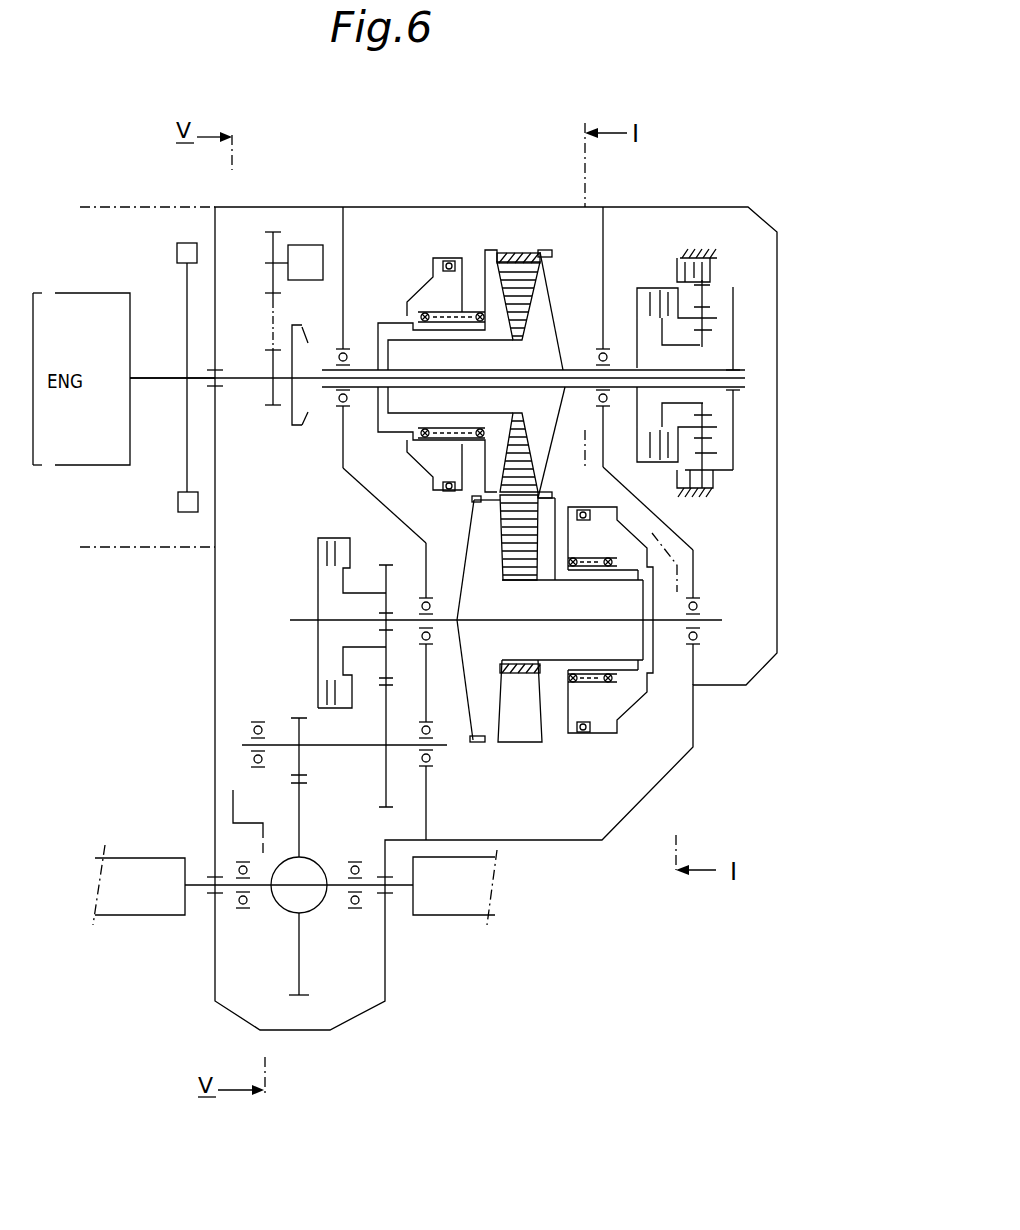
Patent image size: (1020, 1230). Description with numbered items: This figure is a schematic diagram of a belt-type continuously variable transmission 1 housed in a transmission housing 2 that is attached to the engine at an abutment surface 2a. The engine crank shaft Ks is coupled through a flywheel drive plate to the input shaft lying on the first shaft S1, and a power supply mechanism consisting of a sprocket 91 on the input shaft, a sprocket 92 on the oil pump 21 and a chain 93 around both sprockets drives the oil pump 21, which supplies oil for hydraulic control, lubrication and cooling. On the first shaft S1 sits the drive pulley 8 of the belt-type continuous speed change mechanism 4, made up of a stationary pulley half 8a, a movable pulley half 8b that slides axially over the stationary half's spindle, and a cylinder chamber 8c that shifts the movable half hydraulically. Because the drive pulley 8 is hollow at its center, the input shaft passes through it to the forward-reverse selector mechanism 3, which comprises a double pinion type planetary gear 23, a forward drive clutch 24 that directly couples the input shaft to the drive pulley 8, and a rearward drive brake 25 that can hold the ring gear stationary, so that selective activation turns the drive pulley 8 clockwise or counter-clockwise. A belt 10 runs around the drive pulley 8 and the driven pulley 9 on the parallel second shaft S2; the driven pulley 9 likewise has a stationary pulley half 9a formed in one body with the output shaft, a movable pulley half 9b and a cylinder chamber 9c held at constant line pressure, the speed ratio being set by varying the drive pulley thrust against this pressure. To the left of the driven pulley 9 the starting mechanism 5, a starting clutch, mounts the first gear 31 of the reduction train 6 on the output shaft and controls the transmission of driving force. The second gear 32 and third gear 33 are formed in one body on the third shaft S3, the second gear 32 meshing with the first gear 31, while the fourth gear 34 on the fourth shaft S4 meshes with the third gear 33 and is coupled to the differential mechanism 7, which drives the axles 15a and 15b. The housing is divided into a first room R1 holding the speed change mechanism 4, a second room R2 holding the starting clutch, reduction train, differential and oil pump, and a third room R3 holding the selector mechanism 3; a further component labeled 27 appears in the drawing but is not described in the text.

The belt-type continuously variable transmission 1 is at (483, 157).
The transmission housing 2 is at (762, 218).
The abutment surface 2a is at (213, 233).
The forward-reverse selector mechanism 3 is at (750, 180).
The belt-type continuous speed change mechanism 4 is at (443, 252).
The starting mechanism 5 is at (327, 538).
The reduction train 6 is at (206, 748).
The differential mechanism 7 is at (315, 920).
The drive pulley 8 is at (583, 177).
The stationary pulley half 8a is at (549, 250).
The movable pulley half 8b is at (500, 252).
The cylinder chamber 8c is at (470, 270).
The driven pulley 9 is at (633, 773).
The stationary pulley half 9a is at (487, 715).
The movable pulley half 9b is at (557, 703).
The cylinder chamber 9c is at (590, 693).
The belt 10 is at (507, 548).
The oil pump 21 is at (302, 245).
The double pinion type planetary gear 23 is at (707, 310).
The forward drive clutch 24 is at (649, 288).
The rearward drive brake 25 is at (677, 267).
The one-way clutch 27 is at (300, 302).
The first gear 31 is at (377, 562).
The second gear 32 is at (382, 713).
The third gear 33 is at (297, 717).
The fourth gear 34 is at (297, 813).
The sprocket 91 is at (272, 388).
The sprocket 92 is at (269, 247).
The chain 93 is at (272, 325).
The crank shaft Ks is at (178, 392).
The first shaft S1 is at (742, 387).
The second shaft S2 is at (715, 620).
The third shaft S3 is at (362, 745).
The fourth shaft S4 is at (257, 887).
The first room R1 is at (577, 822).
The second room R2 is at (317, 1005).
The third room R3 is at (742, 652).
The axle 15a is at (150, 898).
The axle 15b is at (437, 895).